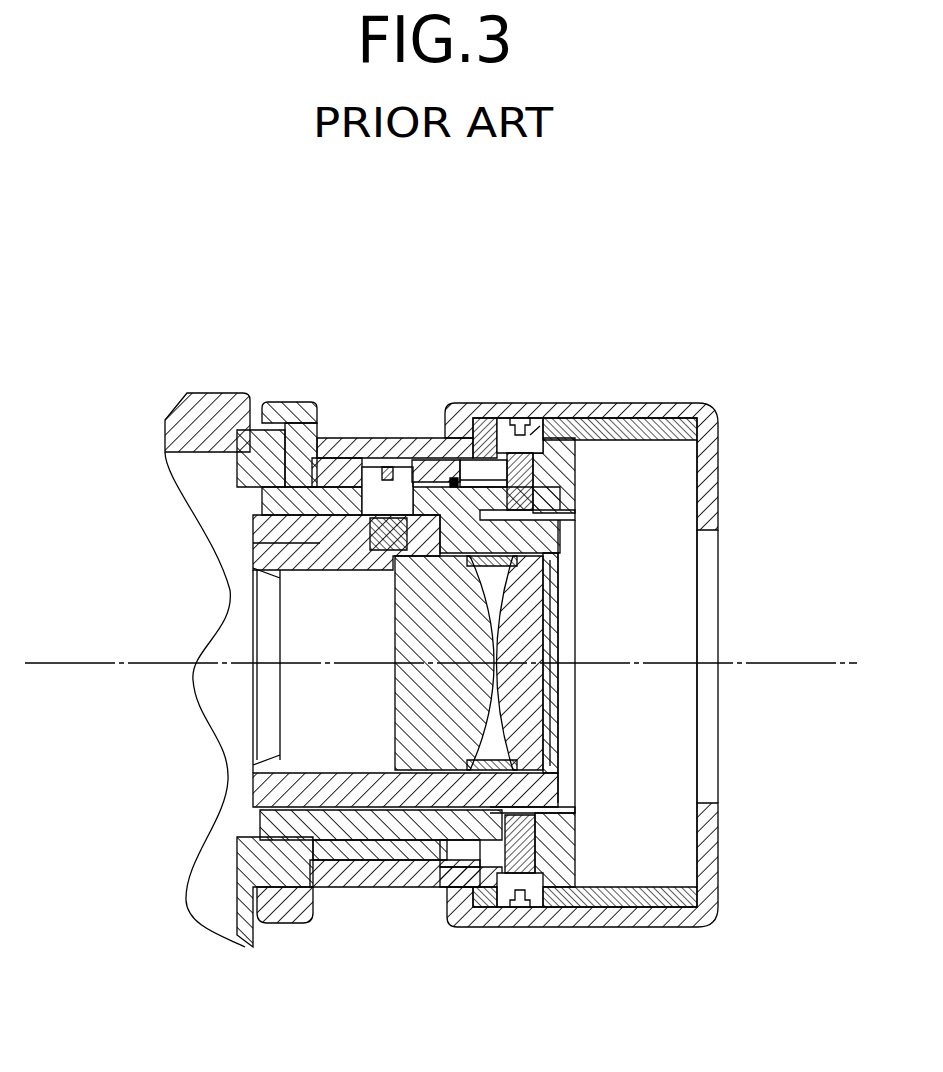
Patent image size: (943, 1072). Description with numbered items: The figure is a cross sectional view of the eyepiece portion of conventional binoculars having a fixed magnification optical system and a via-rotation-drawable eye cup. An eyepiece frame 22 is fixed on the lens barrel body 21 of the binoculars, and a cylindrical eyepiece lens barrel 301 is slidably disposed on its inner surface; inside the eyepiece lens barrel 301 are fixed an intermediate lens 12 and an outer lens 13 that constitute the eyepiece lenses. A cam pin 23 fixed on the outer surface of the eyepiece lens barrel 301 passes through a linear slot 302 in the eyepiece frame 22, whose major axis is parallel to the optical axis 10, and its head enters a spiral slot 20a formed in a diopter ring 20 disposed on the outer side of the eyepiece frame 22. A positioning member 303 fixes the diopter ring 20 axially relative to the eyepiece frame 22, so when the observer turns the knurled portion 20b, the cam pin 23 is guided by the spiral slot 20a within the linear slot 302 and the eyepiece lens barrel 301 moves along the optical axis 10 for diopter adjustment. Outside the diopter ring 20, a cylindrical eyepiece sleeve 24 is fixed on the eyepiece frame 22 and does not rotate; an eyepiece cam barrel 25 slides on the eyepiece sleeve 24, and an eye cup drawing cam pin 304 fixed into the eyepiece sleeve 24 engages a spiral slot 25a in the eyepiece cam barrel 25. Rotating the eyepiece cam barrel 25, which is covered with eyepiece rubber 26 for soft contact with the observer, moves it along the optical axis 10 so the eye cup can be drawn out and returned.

The optical axis 10 is at (764, 663).
The intermediate lens 12 is at (440, 695).
The outer lens 13 is at (530, 700).
The diopter ring 20 is at (326, 405).
The spiral slot 20a is at (425, 445).
The knurled portion 20b is at (273, 400).
The lens barrel body 21 is at (218, 395).
The eyepiece frame 22 is at (242, 467).
The cam pin 23 is at (392, 450).
The eyepiece sleeve 24 is at (560, 470).
The eyepiece cam barrel 25 is at (686, 425).
The spiral slot 25a is at (525, 420).
The eyepiece rubber 26 is at (708, 455).
The eyepiece lens barrel 301 is at (368, 797).
The linear slot 302 is at (355, 495).
The positioning member 303 is at (487, 440).
The eye cup drawing cam pin 304 is at (540, 418).